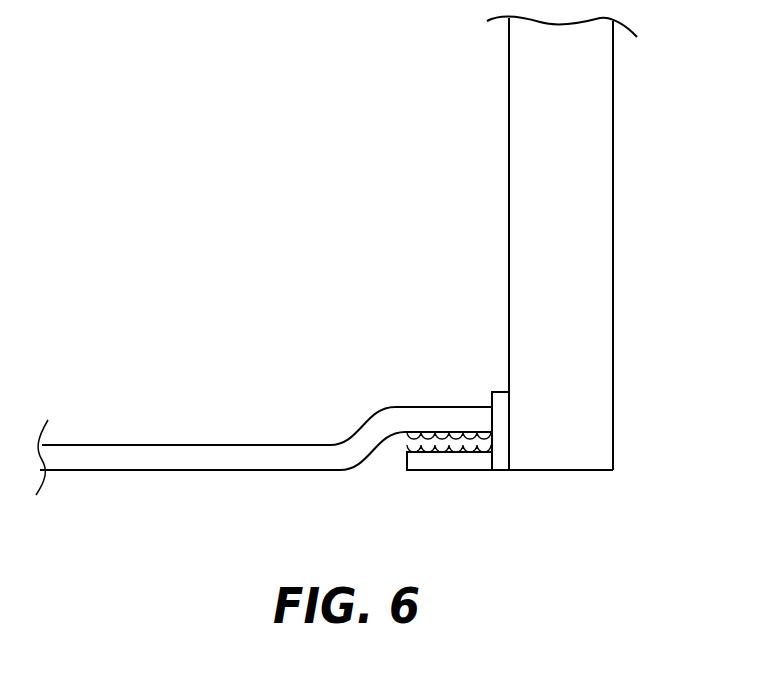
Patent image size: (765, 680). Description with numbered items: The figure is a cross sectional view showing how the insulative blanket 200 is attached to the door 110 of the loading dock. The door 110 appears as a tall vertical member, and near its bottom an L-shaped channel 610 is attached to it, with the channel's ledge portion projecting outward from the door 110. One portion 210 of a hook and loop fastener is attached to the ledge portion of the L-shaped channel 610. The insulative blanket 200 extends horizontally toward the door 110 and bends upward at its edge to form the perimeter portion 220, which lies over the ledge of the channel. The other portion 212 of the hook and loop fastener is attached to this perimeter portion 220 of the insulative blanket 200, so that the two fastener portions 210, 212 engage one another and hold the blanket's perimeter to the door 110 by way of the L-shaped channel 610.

The door 110 is at (598, 285).
The insulative blanket 200 is at (130, 462).
The portion of the hook and loop fastener 210 is at (411, 440).
The other portion of the hook and loop fastener 212 is at (440, 445).
The perimeter portion 220 is at (416, 407).
The L-shaped channel 610 is at (501, 392).